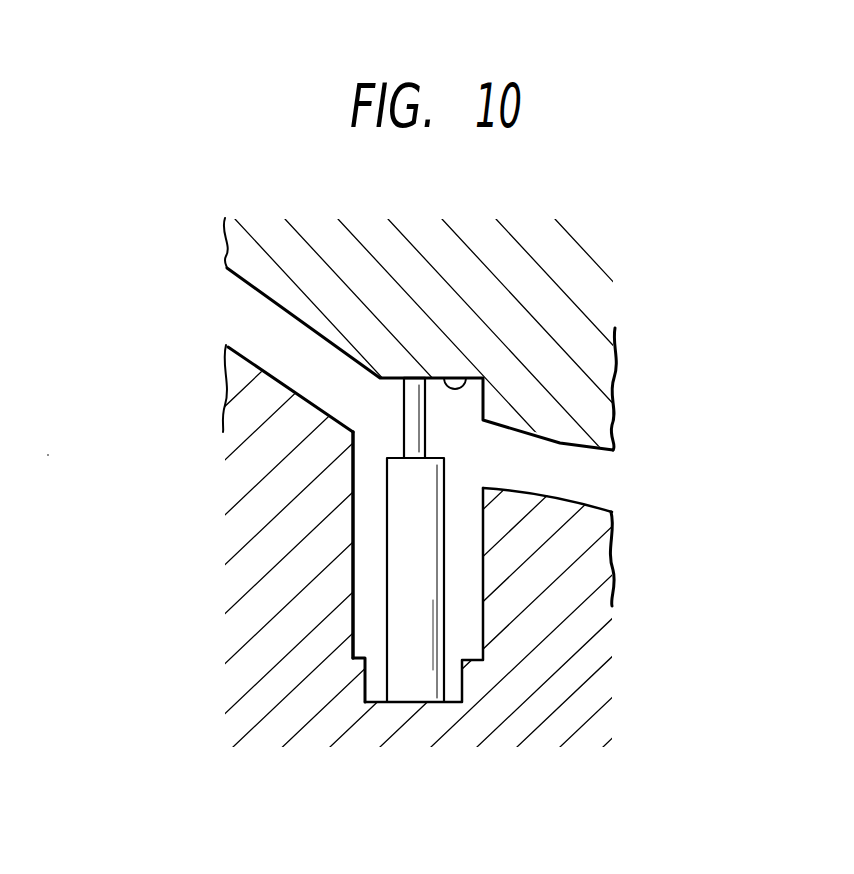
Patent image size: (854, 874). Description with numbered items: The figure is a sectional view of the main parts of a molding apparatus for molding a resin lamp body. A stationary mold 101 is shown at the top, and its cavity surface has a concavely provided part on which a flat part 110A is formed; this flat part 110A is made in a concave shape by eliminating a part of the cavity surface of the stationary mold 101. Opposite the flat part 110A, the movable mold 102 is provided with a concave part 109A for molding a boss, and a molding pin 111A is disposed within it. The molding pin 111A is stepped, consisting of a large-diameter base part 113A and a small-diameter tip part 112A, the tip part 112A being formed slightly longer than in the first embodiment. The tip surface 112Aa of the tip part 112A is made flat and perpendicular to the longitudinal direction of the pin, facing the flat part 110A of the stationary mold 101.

The stationary mold 101 is at (558, 362).
The movable mold 102 is at (542, 627).
The concave part 109A is at (106, 647).
The flat part 110A is at (444, 378).
The molding pin 111A is at (367, 628).
The tip part 112A is at (107, 442).
The tip surface 112Aa is at (328, 175).
The base part 113A is at (107, 552).